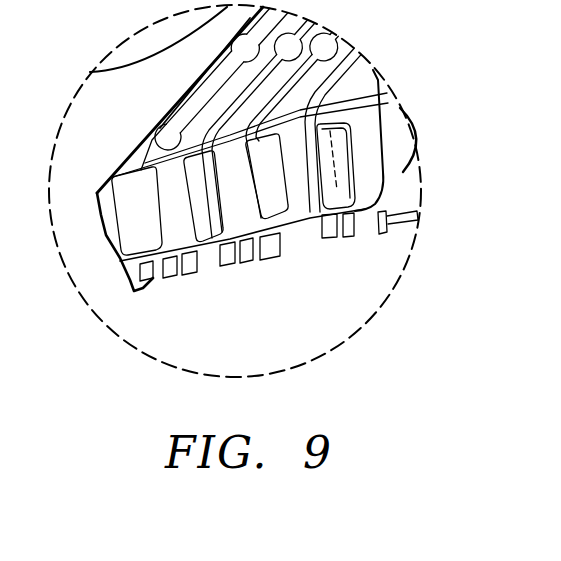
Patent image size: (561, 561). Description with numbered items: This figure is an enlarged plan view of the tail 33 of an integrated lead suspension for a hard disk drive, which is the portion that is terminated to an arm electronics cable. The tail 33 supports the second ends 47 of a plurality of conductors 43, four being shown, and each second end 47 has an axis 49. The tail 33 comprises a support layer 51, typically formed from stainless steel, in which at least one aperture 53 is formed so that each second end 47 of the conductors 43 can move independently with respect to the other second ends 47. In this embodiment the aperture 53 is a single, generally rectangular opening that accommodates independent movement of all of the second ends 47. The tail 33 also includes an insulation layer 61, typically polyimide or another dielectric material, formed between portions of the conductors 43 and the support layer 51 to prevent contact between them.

The tail 33 is at (340, 292).
The conductors 43 is at (178, 126).
The second end 47 is at (148, 240).
The axis 49 is at (347, 232).
The support layer 51 is at (403, 224).
The aperture 53 is at (205, 253).
The insulation layer 61 is at (403, 188).